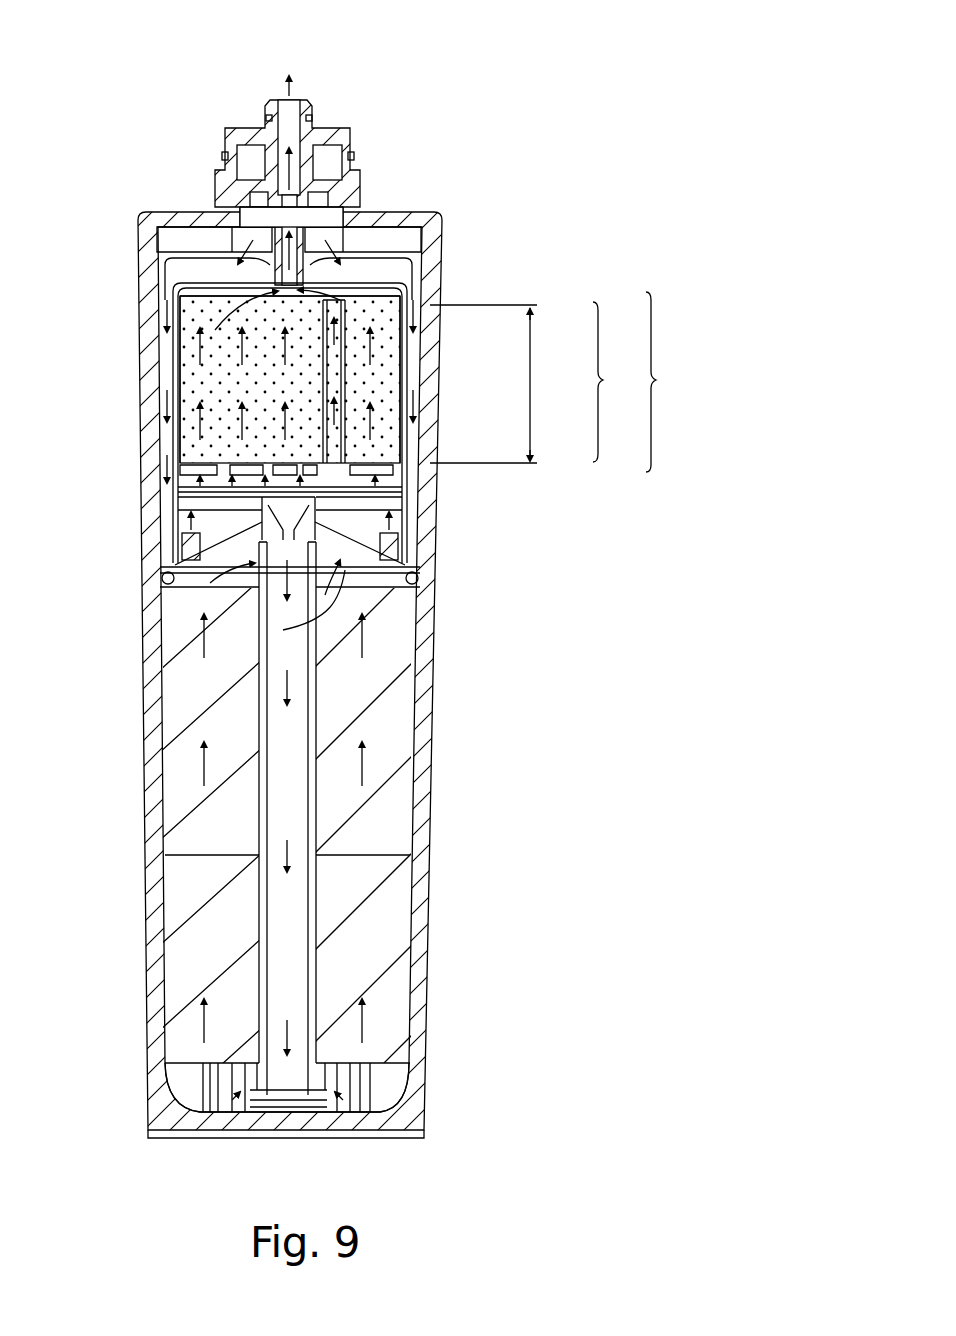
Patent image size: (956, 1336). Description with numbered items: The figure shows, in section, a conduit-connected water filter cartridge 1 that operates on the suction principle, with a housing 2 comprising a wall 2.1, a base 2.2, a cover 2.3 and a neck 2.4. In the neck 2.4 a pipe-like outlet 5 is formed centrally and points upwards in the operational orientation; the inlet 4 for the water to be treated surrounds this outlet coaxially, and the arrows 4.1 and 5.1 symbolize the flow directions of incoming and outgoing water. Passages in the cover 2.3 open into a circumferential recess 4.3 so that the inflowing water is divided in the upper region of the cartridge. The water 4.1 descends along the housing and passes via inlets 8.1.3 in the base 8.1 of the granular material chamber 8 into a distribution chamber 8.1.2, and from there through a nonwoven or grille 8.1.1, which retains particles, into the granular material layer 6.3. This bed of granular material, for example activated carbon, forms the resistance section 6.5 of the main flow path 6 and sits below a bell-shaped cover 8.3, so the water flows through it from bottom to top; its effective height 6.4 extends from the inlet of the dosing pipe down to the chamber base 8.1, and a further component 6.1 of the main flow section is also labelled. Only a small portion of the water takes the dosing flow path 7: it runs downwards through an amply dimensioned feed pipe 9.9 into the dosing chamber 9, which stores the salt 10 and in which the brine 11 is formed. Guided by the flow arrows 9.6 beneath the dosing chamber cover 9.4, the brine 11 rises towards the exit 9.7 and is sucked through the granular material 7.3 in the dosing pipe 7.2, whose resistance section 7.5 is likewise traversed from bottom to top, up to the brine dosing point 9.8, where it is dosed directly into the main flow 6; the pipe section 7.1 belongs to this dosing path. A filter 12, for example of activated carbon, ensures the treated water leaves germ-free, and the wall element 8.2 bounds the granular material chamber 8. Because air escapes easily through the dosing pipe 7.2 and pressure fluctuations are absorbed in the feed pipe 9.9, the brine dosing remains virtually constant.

The water filter cartridge 1 is at (135, 60).
The housing 2 is at (540, 660).
The wall 2.1 is at (400, 745).
The base 2.2 is at (380, 1130).
The cover 2.3 is at (403, 210).
The neck 2.4 is at (393, 120).
The inlet 4 is at (335, 132).
The flow direction arrows of the water to be treated 4.1 is at (235, 118).
The circumferential recess 4.3 is at (210, 214).
The outlet 5 is at (300, 115).
The flow direction arrow of the treated water 5.1 is at (298, 100).
The main flow path 6 is at (265, 380).
The filter medium 6.1 is at (255, 338).
The granular material layer 6.3 is at (290, 400).
The effective height of the granular material layer 6.4 is at (533, 380).
The resistance section of the main flow path 6.5 is at (673, 382).
The dosing flow path 7 is at (205, 705).
The flow channel 7.1 is at (420, 335).
The dosing pipe 7.2 is at (420, 315).
The granular material of the dosing pipe 7.3 is at (420, 385).
The resistance section of the dosing flow path 7.5 is at (619, 382).
The granular material chamber 8 is at (170, 330).
The granular material chamber base 8.1 is at (185, 490).
The nonwoven or grille 8.1.1 is at (190, 500).
The distribution chamber 8.1.2 is at (185, 520).
The inlets 8.1.3 is at (175, 575).
The cartridge wall 8.2 is at (165, 285).
The bell-shaped cover of the granular material chamber 8.3 is at (176, 295).
The dosing chamber 9 is at (200, 860).
The dosing chamber cover 9.4 is at (232, 575).
The flow arrows in the dosing chamber 9.6 is at (225, 595).
The exit of the dosing chamber 9.7 is at (335, 592).
The brine dosing point 9.8 is at (392, 300).
The feed pipe 9.9 is at (210, 1025).
The salt 10 is at (200, 940).
The brine 11 is at (225, 790).
The filter 12 is at (185, 470).